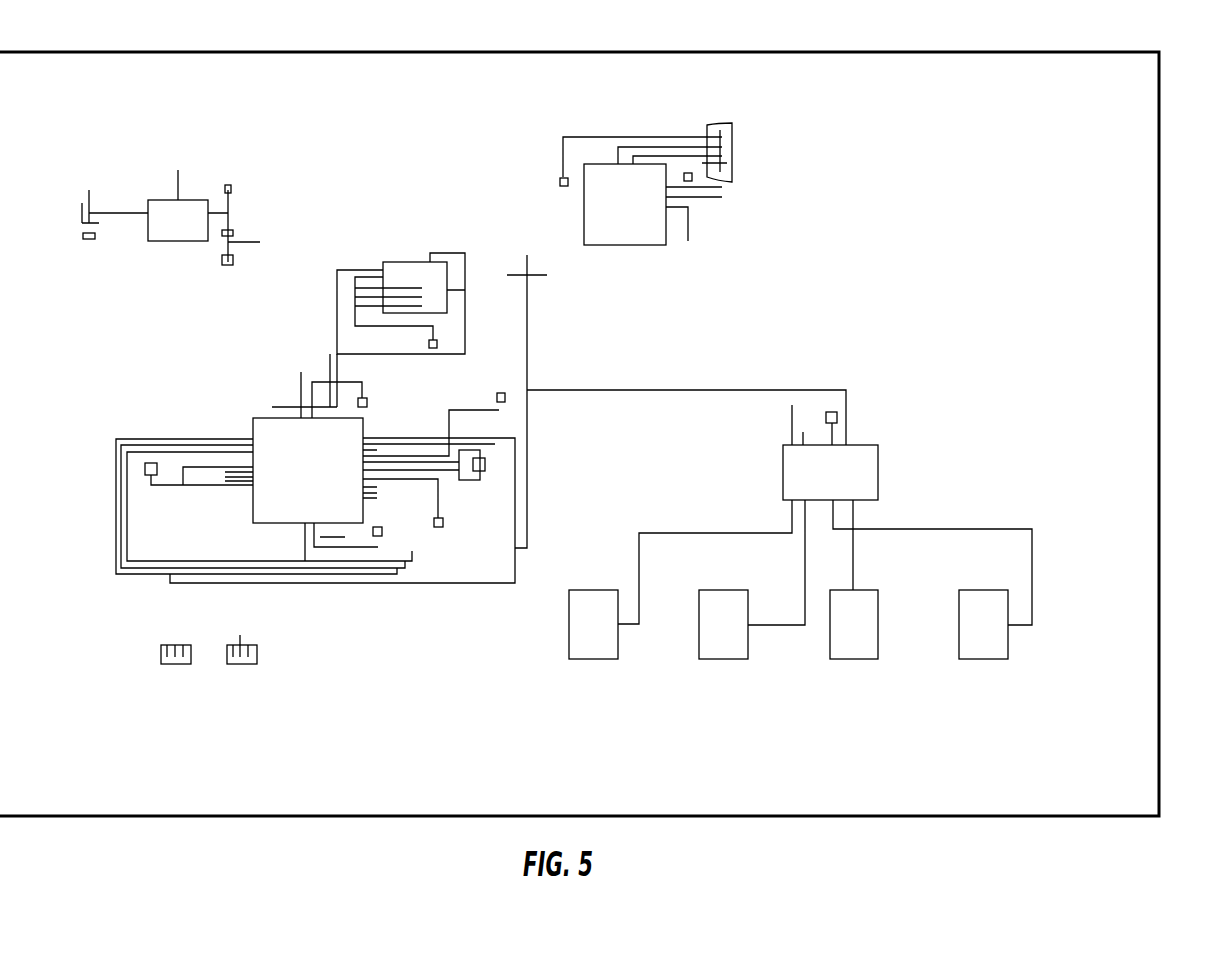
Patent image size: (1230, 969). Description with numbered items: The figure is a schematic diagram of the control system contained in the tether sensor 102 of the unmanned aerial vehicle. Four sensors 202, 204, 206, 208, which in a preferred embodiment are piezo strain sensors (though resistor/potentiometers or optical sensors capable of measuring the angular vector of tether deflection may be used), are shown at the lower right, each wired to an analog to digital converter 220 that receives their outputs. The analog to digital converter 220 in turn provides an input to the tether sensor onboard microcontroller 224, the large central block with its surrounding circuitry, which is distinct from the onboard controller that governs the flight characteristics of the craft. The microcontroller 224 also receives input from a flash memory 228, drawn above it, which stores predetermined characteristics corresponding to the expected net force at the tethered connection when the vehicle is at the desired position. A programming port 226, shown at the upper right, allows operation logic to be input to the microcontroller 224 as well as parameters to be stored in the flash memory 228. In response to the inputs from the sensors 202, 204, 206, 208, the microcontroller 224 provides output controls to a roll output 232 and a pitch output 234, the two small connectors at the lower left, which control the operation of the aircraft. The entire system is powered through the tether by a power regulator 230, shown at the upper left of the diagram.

The tether sensor 102 is at (1135, 370).
The sensor 202 is at (849, 645).
The sensor 204 is at (980, 645).
The sensor 206 is at (718, 645).
The sensor 208 is at (588, 645).
The analog to digital converter 220 is at (858, 468).
The tether sensor onboard microcontroller 224 is at (383, 420).
The programming port 226 is at (634, 222).
The flash memory 228 is at (413, 270).
The power regulator 230 is at (175, 225).
The roll output 232 is at (175, 665).
The pitch output 234 is at (247, 665).